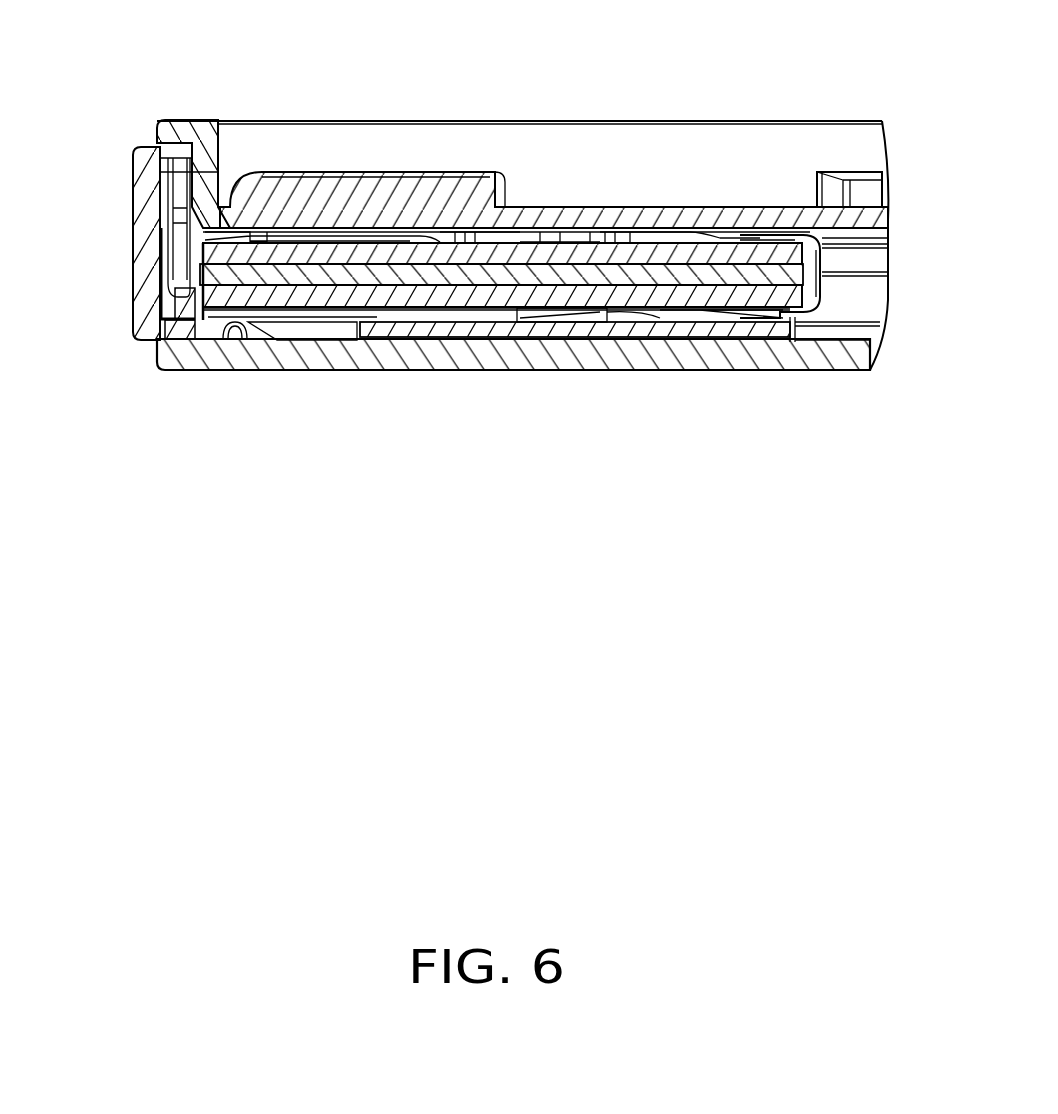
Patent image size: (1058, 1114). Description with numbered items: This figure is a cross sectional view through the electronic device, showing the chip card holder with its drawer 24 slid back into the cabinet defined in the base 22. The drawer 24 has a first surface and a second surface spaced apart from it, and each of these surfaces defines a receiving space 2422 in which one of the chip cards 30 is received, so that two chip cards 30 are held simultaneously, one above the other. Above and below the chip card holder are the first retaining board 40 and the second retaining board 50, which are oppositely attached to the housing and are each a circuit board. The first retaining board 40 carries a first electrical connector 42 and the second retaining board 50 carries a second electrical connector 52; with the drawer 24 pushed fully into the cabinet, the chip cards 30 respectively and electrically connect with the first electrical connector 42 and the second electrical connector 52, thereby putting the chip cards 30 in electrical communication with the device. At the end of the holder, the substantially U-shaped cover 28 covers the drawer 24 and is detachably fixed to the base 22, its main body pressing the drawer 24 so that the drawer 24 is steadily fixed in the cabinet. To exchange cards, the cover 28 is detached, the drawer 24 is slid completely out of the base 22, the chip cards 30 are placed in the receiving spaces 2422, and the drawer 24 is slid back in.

The base 22 is at (203, 137).
The drawer 24 is at (462, 273).
The receiving space 2422 is at (162, 248).
The cover 28 is at (149, 221).
The chip card 30 is at (678, 252).
The first retaining board 40 is at (325, 217).
The first electrical connector 42 is at (617, 227).
The second retaining board 50 is at (470, 330).
The second electrical connector 52 is at (398, 322).